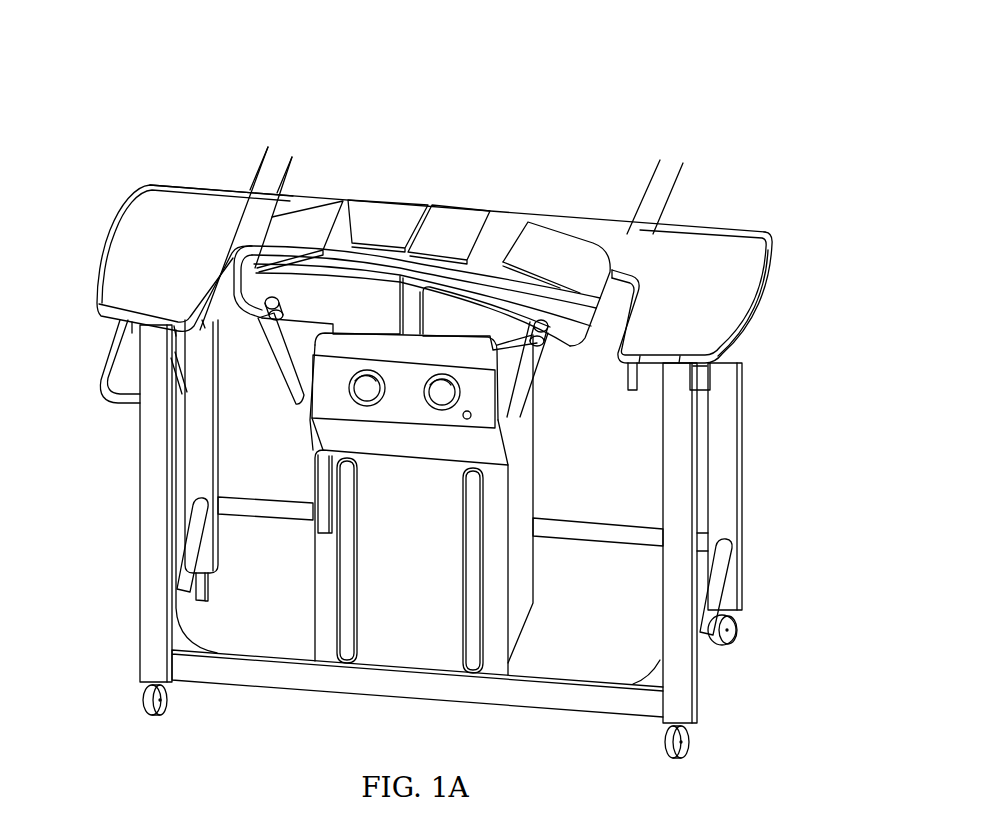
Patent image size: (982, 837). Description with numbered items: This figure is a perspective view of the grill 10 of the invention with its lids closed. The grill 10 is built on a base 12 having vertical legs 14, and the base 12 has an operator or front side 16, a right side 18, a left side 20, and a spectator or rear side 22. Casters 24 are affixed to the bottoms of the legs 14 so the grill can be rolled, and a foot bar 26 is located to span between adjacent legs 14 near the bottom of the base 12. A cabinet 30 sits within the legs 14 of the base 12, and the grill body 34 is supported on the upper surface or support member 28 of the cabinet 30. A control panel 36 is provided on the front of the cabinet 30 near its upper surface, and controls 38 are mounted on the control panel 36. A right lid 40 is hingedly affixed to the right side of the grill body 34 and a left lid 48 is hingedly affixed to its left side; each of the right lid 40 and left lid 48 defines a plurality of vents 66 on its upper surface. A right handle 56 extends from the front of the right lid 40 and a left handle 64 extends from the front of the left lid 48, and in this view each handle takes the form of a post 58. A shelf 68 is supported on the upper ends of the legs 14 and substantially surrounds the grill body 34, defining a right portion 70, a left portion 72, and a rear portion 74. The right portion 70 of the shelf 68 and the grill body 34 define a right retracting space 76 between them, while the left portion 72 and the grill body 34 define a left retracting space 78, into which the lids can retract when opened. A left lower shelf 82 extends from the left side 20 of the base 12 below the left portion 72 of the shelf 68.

The grill 10 is at (270, 66).
The base 12 is at (116, 650).
The vertical legs 14 is at (218, 473).
The front side 16 is at (370, 704).
The right side 18 is at (764, 530).
The left side 20 is at (116, 492).
The rear side 22 is at (526, 187).
The casters 24 is at (212, 589).
The foot bar 26 is at (182, 585).
The support member 28 is at (533, 483).
The cabinet 30 is at (392, 590).
The grill body 34 is at (277, 378).
The control panel 36 is at (307, 423).
The controls 38 is at (433, 387).
The right lid 40 is at (560, 232).
The left lid 48 is at (322, 214).
The right handle 56 is at (288, 303).
The post 58 is at (438, 351).
The left handle 64 is at (535, 352).
The vents 66 is at (410, 207).
The shelf 68 is at (728, 227).
The right portion 70 is at (764, 263).
The left portion 72 is at (134, 223).
The rear portion 74 is at (606, 227).
The right retracting space 76 is at (623, 150).
The left retracting space 78 is at (323, 180).
The left lower shelf 82 is at (113, 380).